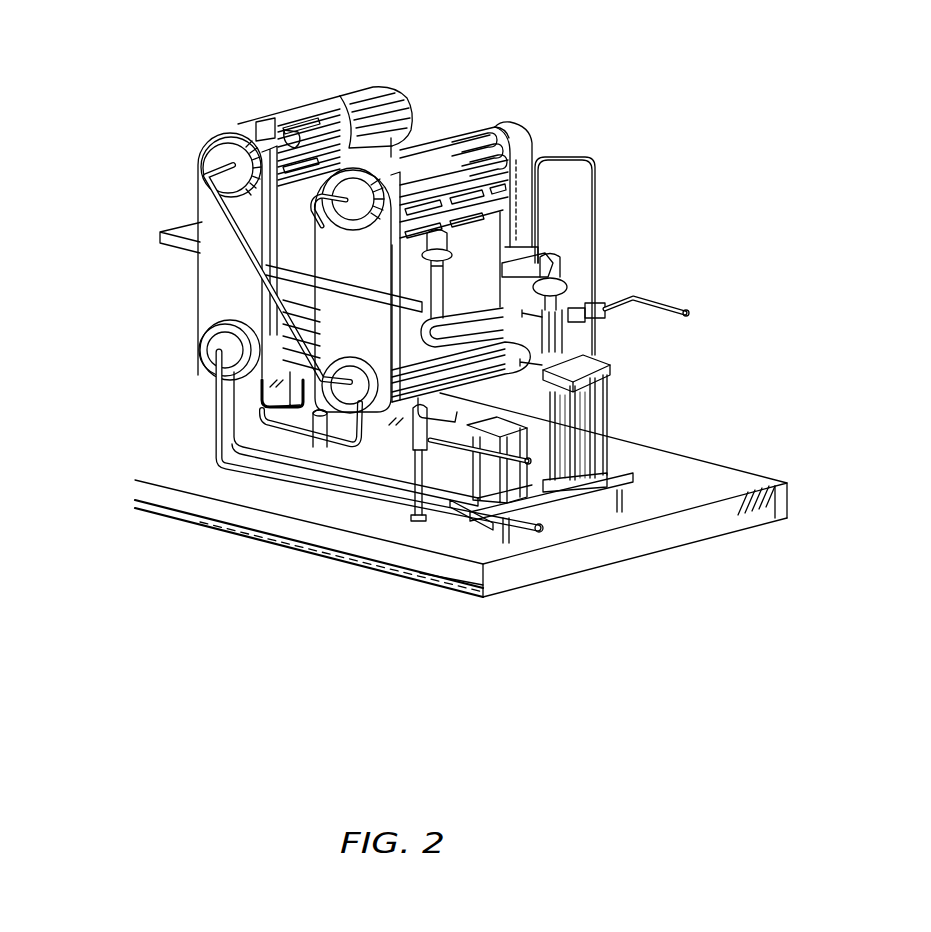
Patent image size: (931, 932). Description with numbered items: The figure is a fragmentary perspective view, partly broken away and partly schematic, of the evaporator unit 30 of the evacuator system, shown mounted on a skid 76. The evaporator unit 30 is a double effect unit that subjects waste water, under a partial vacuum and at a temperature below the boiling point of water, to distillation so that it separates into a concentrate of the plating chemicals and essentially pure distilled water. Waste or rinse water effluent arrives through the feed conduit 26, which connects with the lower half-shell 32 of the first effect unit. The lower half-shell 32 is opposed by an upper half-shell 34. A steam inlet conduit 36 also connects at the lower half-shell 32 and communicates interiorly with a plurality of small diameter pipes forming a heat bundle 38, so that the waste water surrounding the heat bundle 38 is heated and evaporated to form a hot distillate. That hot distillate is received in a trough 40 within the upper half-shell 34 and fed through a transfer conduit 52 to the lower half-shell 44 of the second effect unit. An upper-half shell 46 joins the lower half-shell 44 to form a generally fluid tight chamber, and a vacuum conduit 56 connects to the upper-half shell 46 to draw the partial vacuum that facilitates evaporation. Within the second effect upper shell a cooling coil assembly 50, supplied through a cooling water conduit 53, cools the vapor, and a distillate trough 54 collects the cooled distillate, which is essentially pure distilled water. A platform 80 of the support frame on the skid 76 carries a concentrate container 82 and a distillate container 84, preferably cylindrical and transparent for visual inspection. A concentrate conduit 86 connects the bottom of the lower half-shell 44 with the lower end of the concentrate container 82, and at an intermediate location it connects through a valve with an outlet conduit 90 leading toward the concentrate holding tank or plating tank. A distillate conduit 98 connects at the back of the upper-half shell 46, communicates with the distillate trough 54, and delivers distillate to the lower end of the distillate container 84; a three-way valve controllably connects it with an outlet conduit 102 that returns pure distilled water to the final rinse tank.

The evaporator unit 30 is at (357, 72).
The feed conduit 26 is at (433, 500).
The lower half-shell 32 is at (212, 306).
The upper half-shell 34 is at (200, 200).
The steam inlet conduit 36 is at (220, 397).
The heat bundle 38 is at (262, 286).
The trough 40 is at (348, 94).
The lower half-shell 44 is at (378, 346).
The upper-half shell 46 is at (532, 150).
The cooling coil assembly 50 is at (507, 147).
The transfer conduit 52 is at (213, 220).
The cooling water conduit 53 is at (347, 222).
The distillate trough 54 is at (486, 203).
The vacuum conduit 56 is at (401, 147).
The skid 76 is at (657, 507).
The platform 80 is at (627, 480).
The concentrate container 82 is at (525, 486).
The distillate container 84 is at (600, 423).
The concentrate conduit 86 is at (410, 457).
The outlet conduit 90 is at (457, 445).
The distillate conduit 98 is at (580, 160).
The outlet conduit 102 is at (667, 303).